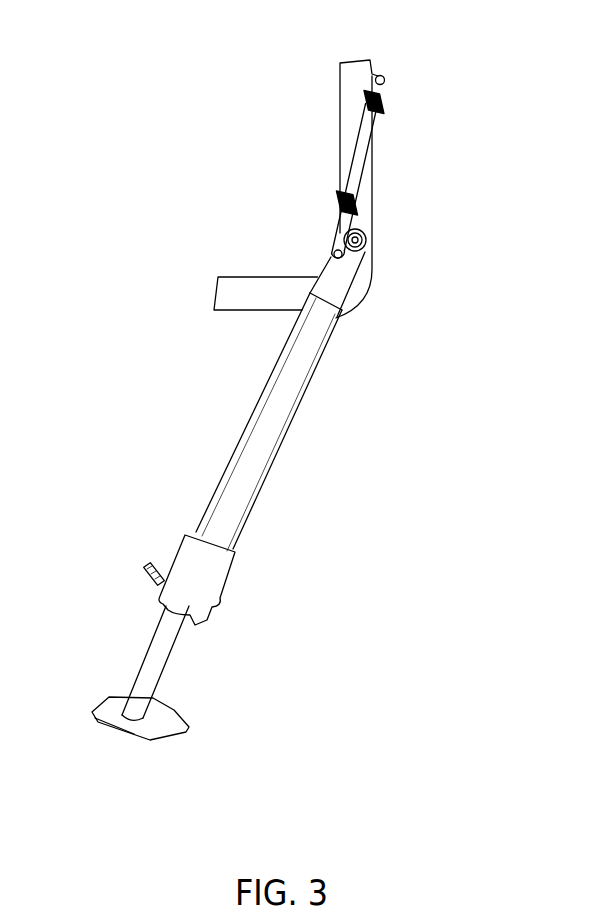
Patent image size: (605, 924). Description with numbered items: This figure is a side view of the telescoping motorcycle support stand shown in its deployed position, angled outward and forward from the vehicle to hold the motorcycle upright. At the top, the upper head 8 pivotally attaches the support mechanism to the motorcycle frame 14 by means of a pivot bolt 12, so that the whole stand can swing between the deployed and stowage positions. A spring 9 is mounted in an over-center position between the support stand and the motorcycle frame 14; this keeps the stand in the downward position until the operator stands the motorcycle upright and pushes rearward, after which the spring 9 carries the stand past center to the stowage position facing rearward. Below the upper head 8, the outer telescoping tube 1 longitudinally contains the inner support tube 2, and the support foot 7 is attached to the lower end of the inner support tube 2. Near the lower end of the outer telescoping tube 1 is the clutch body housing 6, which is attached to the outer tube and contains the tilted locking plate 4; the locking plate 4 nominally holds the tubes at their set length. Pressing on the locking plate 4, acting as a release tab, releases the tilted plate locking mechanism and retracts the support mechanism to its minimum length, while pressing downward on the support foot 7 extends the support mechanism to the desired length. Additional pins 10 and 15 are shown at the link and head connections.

The outer telescoping tube 1 is at (298, 407).
The inner support tube 2 is at (148, 645).
The tilted locking plate 4 is at (148, 563).
The clutch body housing 6 is at (237, 554).
The support foot 7 is at (173, 715).
The upper head 8 is at (332, 287).
The spring 9 is at (383, 97).
The lower pin of the link rod 10 is at (333, 247).
The pivot bolt 12 is at (366, 235).
The motorcycle frame 14 is at (338, 133).
The upper pivot pin 15 is at (378, 75).